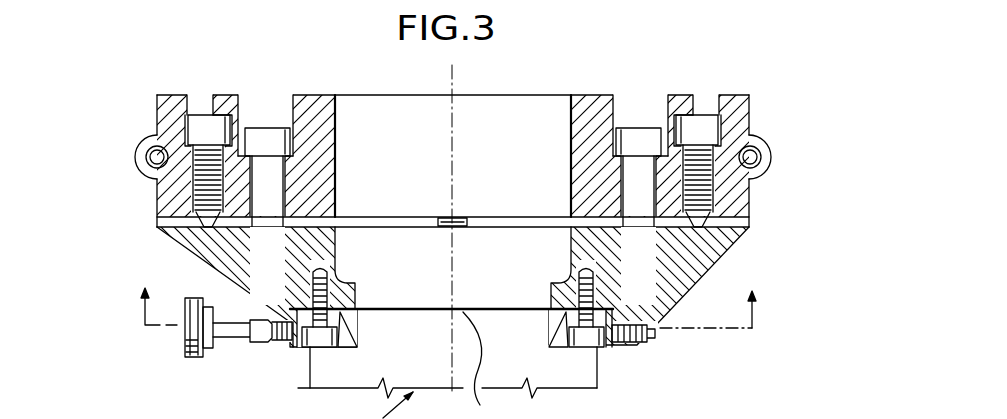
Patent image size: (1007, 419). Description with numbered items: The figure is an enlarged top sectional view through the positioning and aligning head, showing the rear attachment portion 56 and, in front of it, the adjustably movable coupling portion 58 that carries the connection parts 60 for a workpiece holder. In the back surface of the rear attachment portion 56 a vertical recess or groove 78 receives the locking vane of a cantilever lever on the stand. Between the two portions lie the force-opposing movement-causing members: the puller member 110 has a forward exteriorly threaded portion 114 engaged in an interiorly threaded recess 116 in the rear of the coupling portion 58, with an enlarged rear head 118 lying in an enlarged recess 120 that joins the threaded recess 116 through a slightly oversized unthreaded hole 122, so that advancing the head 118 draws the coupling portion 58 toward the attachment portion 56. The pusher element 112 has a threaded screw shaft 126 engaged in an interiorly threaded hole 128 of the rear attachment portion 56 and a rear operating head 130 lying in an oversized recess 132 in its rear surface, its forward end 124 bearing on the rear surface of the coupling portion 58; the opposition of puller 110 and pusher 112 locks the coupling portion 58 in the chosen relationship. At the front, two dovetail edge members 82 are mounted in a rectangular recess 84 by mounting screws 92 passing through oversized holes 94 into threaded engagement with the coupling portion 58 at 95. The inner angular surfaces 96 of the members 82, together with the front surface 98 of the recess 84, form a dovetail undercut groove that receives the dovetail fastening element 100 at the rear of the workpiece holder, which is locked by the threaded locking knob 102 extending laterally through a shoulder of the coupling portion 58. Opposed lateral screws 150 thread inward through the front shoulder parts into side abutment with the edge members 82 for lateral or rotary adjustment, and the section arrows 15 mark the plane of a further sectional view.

The section indication 15- 15 is at (448, 296).
The rear attachment portion 56 is at (128, 156).
The coupling portion 58 is at (177, 255).
The connection parts 60 is at (340, 350).
The vertical recess or groove 78 is at (192, 100).
The dovetail edge member 82 is at (343, 362).
The rectangular recess 84 is at (478, 393).
The mounting screw 92 is at (310, 348).
The oversized hole 94 is at (307, 345).
The threaded engagement part of coupling portion 95 is at (335, 280).
The inner angular surfaces 96 is at (340, 337).
The front surface of recess 98 is at (352, 317).
The dovetail-cooperable fastening element 100 is at (426, 354).
The locking knob 102 is at (185, 355).
The puller translatory movement-causing member 110 is at (312, 198).
The pusher translatory movement element 112 is at (185, 153).
The forward exteriorly threaded portion 114 is at (322, 230).
The interiorly threaded recess 116 is at (263, 267).
The enlarged rear head 118 is at (263, 128).
The enlarged recess 120 is at (283, 107).
The oversized unthreaded hole 122 is at (320, 162).
The forward abutment end 124 is at (200, 224).
The threaded screw shaft 126 is at (190, 150).
The interiorly threaded hole 128 is at (203, 188).
The rear operating head 130 is at (200, 112).
The oversized recess 132 is at (233, 108).
The opposed lateral adjusting screws 150 is at (250, 330).